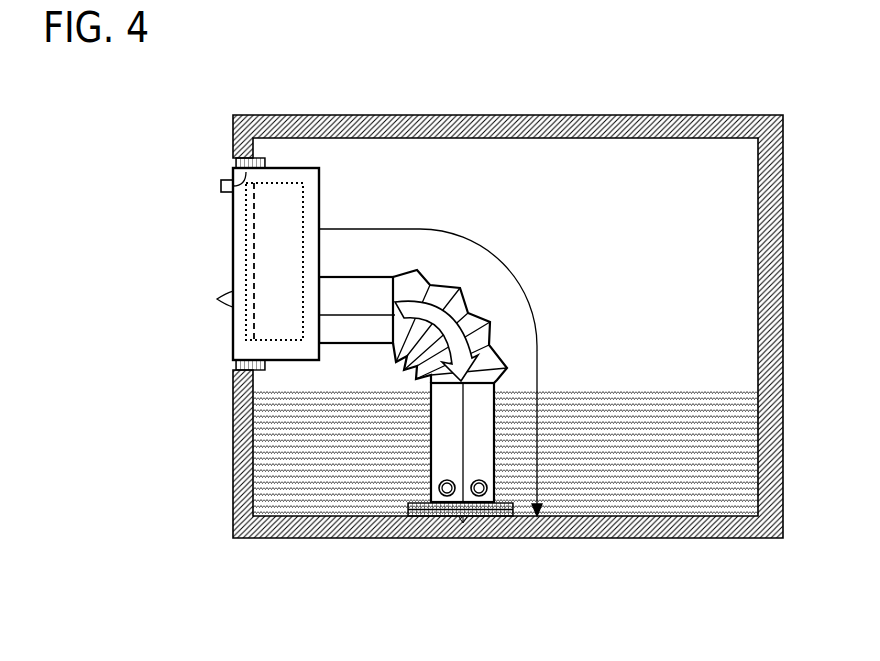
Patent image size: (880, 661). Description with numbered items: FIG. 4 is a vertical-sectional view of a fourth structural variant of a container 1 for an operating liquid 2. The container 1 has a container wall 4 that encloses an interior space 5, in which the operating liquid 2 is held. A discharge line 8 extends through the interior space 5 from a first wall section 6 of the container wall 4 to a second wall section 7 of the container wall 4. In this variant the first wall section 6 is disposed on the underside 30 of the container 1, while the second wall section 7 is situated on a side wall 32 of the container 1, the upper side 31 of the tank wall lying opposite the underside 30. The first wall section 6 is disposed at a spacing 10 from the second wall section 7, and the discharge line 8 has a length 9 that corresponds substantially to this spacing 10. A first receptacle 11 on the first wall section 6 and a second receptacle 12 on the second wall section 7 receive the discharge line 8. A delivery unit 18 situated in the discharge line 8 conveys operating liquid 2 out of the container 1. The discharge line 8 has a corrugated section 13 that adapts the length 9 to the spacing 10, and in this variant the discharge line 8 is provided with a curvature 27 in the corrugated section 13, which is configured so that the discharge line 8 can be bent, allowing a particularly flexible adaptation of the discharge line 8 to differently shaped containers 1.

The container 1 is at (196, 100).
The operating liquid 2 is at (668, 392).
The container wall 4 is at (235, 441).
The interior space 5 is at (565, 172).
The first wall section 6 is at (463, 505).
The second wall section 7 is at (214, 266).
The discharge line 8 is at (350, 283).
The length 9 is at (347, 318).
The spacing 10 is at (504, 262).
The first receptacle 11 is at (452, 559).
The second receptacle 12 is at (190, 356).
The corrugated section 13 is at (418, 270).
The delivery unit 18 is at (240, 213).
The curvature 27 is at (500, 308).
The underside 30 is at (658, 540).
The upper side 31 is at (685, 115).
The side wall 32 is at (237, 470).